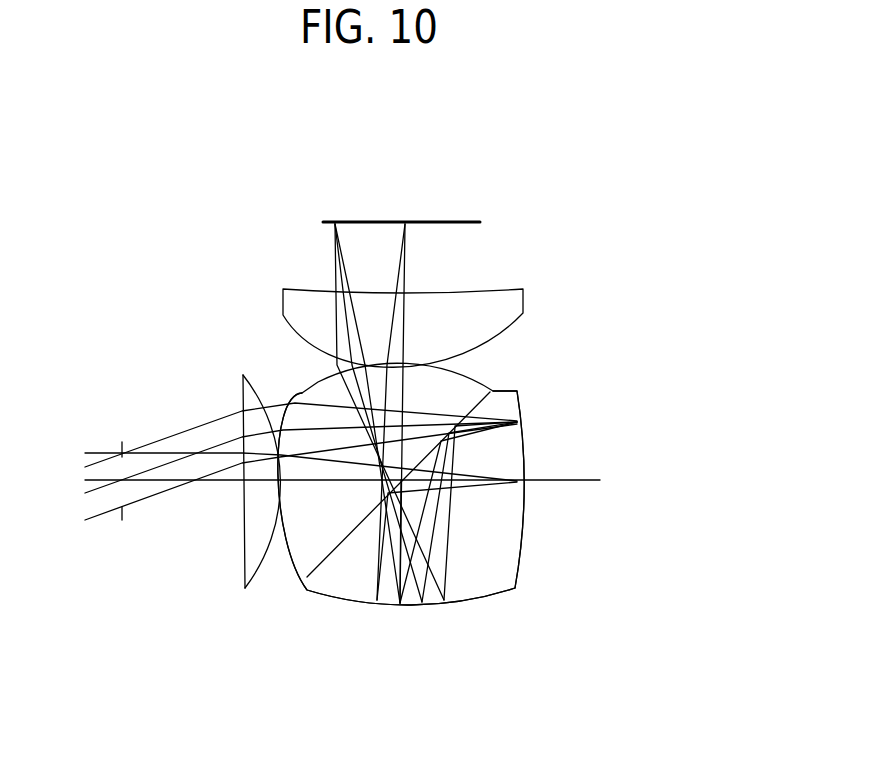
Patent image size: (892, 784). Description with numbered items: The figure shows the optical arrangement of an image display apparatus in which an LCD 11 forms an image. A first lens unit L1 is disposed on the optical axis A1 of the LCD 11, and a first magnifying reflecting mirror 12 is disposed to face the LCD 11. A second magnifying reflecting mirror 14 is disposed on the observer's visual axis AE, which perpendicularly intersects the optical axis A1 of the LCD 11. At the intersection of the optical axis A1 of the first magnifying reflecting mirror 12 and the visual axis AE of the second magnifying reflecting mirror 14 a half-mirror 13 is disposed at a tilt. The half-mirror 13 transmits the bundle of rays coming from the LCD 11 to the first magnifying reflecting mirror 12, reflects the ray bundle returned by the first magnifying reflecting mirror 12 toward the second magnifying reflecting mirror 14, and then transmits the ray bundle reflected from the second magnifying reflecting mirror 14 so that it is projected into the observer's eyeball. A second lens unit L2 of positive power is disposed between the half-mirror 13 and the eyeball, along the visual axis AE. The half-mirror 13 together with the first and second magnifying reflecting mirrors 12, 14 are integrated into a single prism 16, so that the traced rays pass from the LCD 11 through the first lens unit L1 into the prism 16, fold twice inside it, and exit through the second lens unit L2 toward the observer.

The LCD 11 is at (323, 221).
The optical axis of the LCD A1 is at (407, 271).
The first lens unit L1 is at (283, 293).
The first magnifying reflecting mirror 12 is at (470, 599).
The half-mirror 13 is at (318, 553).
The prism 16 is at (503, 407).
The second magnifying reflecting mirror 14 is at (520, 565).
The second lens unit L2 is at (245, 580).
The observer's visual axis AE is at (218, 482).